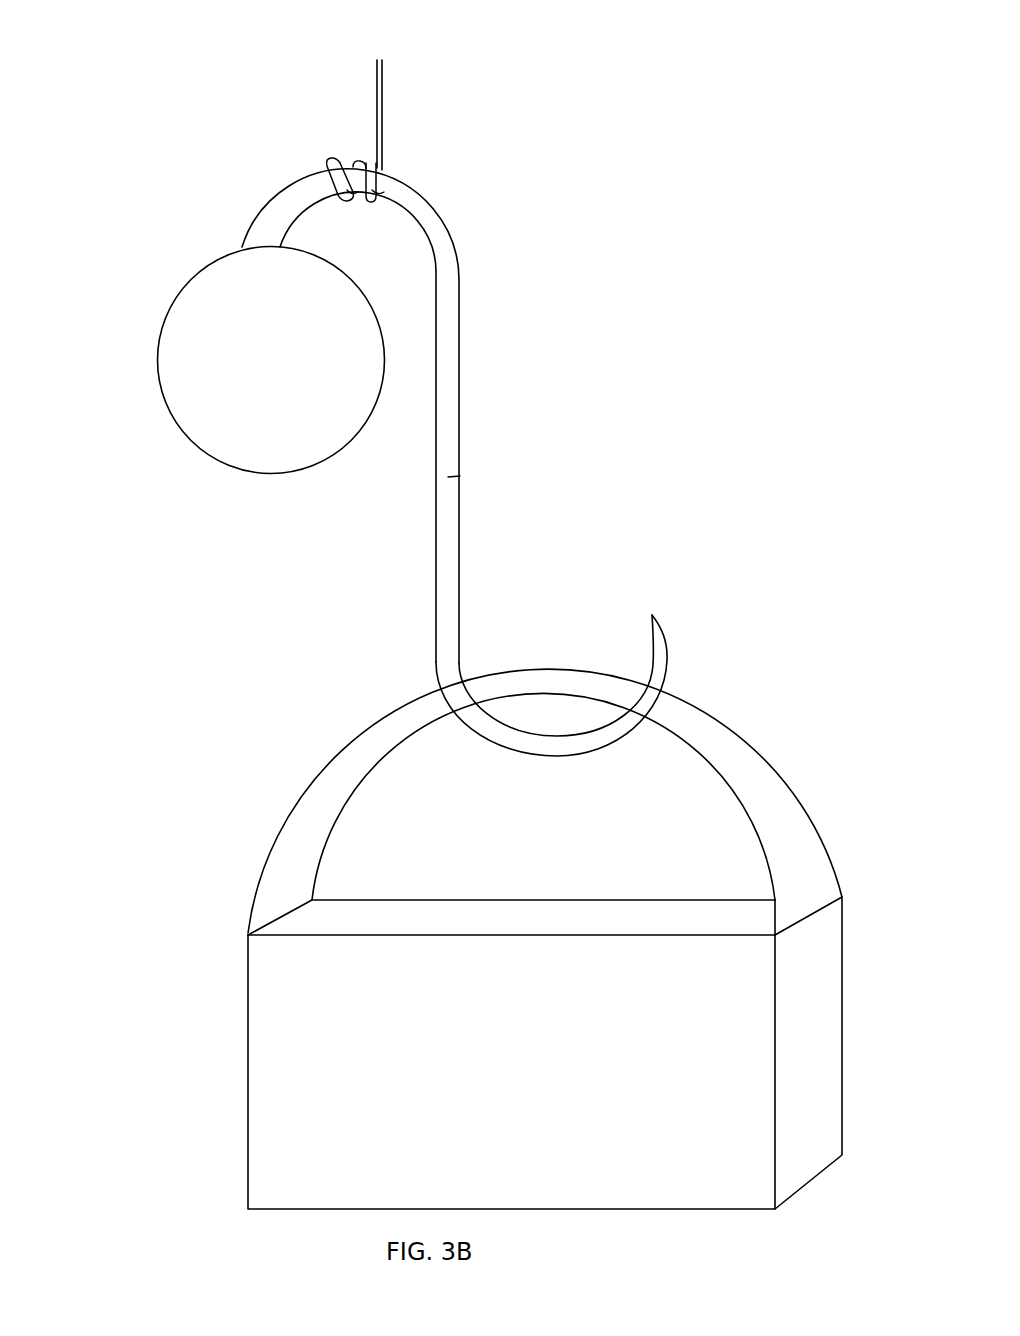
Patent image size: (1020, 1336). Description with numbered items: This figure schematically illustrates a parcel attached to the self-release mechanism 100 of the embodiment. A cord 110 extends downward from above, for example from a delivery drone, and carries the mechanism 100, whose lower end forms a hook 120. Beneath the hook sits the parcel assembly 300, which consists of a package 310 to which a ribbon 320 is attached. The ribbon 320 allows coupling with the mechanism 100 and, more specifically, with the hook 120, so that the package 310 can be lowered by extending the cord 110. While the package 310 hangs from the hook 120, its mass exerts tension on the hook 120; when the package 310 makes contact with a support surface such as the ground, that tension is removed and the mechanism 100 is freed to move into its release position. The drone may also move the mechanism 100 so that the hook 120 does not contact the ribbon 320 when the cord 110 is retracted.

The self-release mechanism 100 is at (413, 493).
The cord 110 is at (375, 68).
The hook 120 is at (580, 763).
The package assembly 300 is at (473, 939).
The package 310 is at (290, 1028).
The ribbon 320 is at (262, 855).